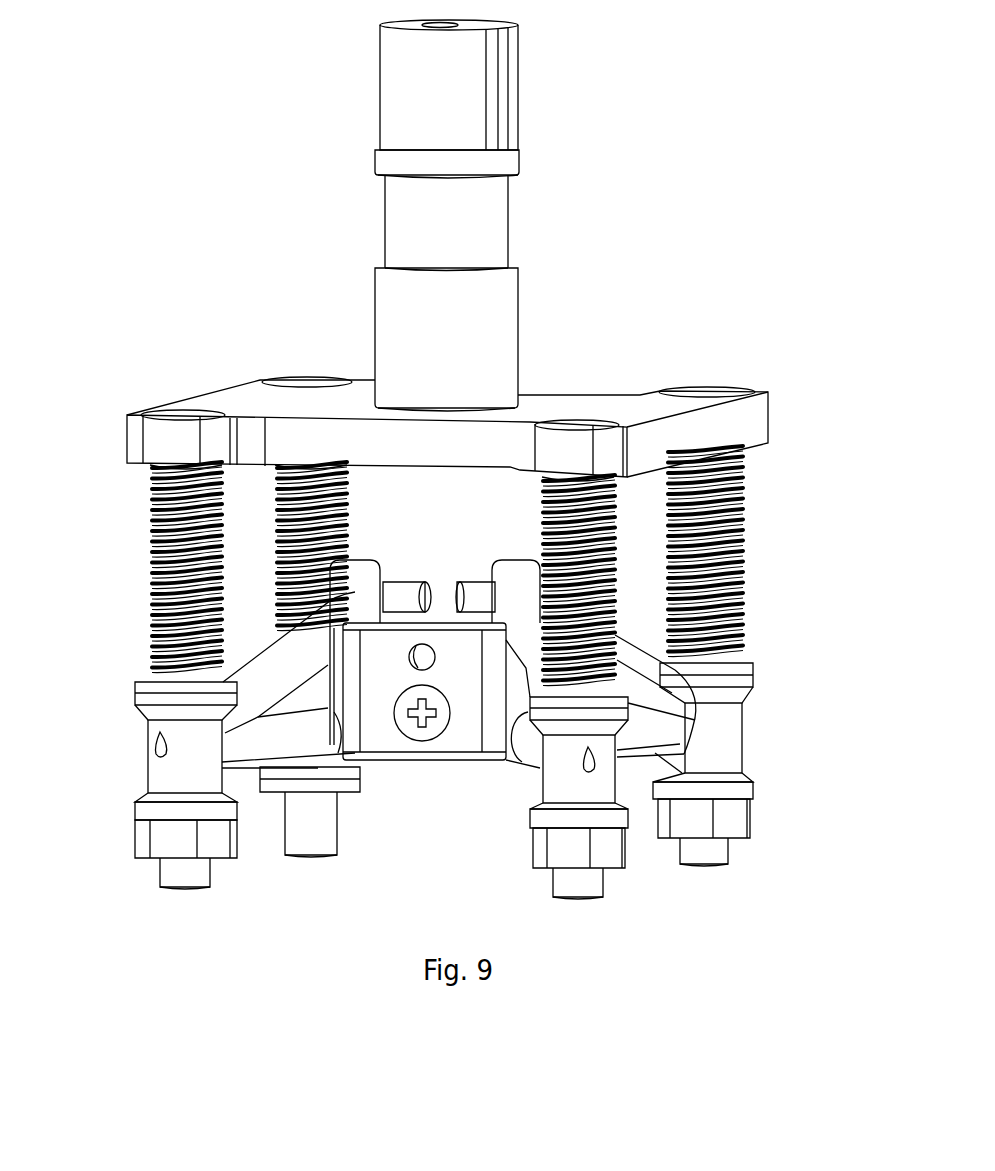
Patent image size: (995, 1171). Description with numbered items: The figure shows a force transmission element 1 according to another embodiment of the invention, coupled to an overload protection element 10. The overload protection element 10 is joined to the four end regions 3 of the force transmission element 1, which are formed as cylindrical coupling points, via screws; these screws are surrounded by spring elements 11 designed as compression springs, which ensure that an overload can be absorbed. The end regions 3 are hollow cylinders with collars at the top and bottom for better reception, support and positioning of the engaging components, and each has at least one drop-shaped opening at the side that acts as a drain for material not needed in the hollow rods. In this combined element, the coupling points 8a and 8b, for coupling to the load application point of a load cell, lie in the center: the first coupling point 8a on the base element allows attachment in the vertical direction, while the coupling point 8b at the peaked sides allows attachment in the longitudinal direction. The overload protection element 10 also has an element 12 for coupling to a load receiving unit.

The force transmission element 1 is at (750, 733).
The end regions 3 is at (148, 774).
The first coupling point 8a is at (420, 720).
The coupling point 8b is at (493, 580).
The overload protection element 10 is at (766, 397).
The spring elements 11 is at (153, 557).
The element for coupling to a load receiving unit 12 is at (510, 200).